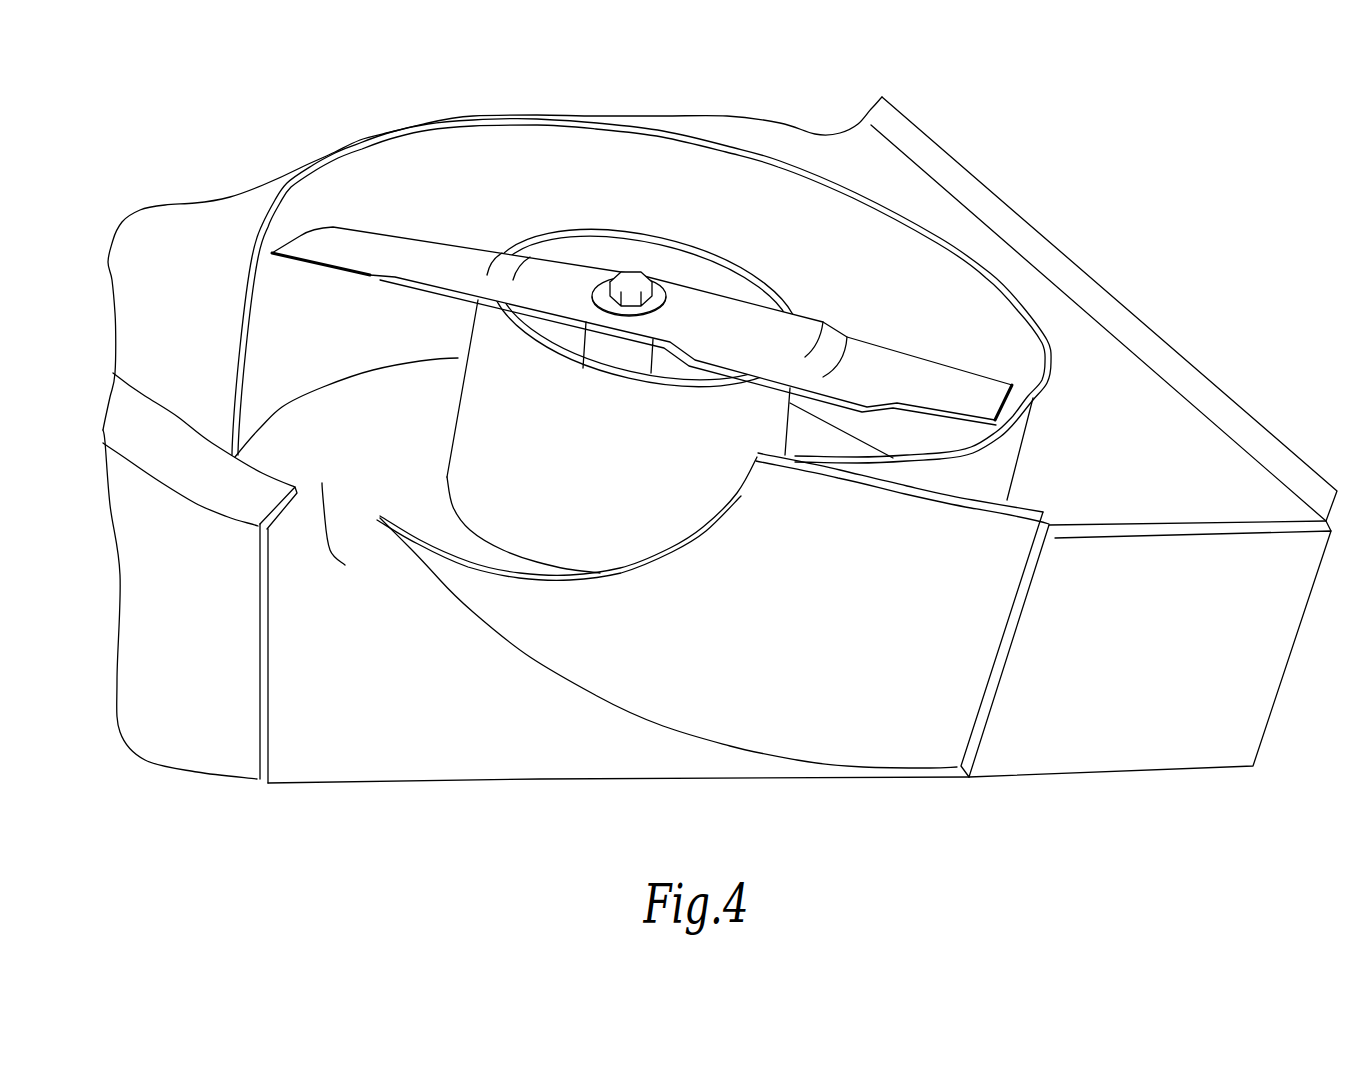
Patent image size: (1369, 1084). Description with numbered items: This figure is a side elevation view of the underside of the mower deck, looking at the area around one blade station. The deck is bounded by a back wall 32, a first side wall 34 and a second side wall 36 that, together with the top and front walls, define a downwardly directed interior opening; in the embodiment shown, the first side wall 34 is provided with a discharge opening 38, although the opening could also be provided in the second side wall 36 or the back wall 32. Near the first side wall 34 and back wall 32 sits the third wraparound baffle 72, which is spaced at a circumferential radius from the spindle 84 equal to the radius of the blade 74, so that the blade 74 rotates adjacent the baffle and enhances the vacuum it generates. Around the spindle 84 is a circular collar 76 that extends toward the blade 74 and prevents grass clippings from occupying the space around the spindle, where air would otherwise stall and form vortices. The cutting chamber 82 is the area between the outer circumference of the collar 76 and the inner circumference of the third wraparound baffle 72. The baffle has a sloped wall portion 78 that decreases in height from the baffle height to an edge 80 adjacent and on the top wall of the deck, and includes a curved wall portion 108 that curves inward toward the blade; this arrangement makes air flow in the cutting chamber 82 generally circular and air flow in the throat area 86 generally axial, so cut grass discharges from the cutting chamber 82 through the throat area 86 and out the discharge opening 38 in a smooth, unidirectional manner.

The back wall 32 is at (1197, 470).
The first side wall 34 is at (1253, 687).
The second side wall 36 is at (129, 566).
The discharge opening 38 is at (358, 743).
The third wraparound baffle 72 is at (1015, 462).
The blade 74 is at (867, 355).
The collar 76 is at (470, 412).
The sloped wall portion 78 is at (497, 566).
The edge 80 is at (380, 516).
The cutting chamber 82 is at (343, 432).
The spindle 84 is at (587, 337).
The throat area 86 is at (345, 565).
The curved wall portion 108 is at (495, 600).